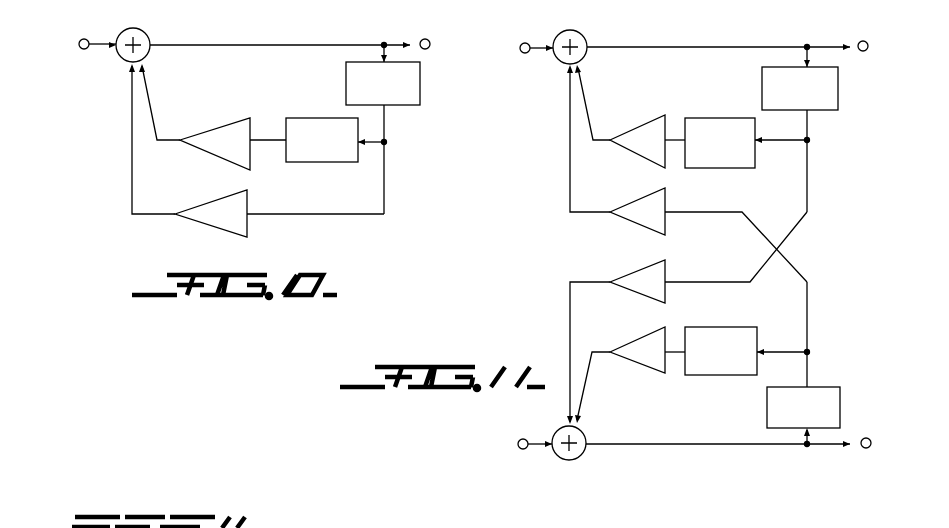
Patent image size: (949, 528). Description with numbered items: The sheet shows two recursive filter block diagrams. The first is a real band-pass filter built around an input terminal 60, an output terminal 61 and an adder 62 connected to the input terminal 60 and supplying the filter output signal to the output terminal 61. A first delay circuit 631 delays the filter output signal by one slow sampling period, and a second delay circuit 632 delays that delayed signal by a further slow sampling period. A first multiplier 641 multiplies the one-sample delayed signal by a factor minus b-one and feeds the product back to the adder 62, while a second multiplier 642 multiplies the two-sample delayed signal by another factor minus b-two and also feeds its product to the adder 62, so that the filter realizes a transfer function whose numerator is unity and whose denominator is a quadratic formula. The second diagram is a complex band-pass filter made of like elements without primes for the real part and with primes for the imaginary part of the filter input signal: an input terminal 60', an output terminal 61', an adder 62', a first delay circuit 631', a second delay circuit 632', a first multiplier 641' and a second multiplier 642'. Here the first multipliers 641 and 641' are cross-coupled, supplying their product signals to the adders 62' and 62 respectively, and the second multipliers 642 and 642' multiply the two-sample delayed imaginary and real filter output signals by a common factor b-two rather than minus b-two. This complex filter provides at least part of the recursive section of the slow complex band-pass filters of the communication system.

In FIG. 10, the input terminal 60 is at (75, 48).
In FIG. 11, the input terminal 60 is at (525, 65).
In FIG. 10, the output terminal 61 is at (438, 57).
In FIG. 11, the output terminal 61 is at (870, 67).
In FIG. 10, the adder 62 is at (100, 65).
In FIG. 11, the adder 62 is at (591, 39).
In FIG. 10, the first delay circuit 631 is at (403, 97).
In FIG. 11, the first delay circuit 631 is at (824, 101).
In FIG. 10, the second delay circuit 632 is at (322, 157).
In FIG. 11, the second delay circuit 632 is at (720, 120).
In FIG. 10, the first multiplier 641 is at (256, 160).
In FIG. 11, the first multiplier 641 is at (687, 318).
In FIG. 10, the second multiplier 642 is at (212, 120).
In FIG. 11, the second multiplier 642 is at (641, 117).
In FIG. 11, the input terminal 60' is at (502, 445).
In FIG. 11, the output terminal 61' is at (869, 462).
In FIG. 11, the adder 62' is at (593, 460).
In FIG. 11, the first delay circuit 631' is at (830, 399).
In FIG. 11, the second delay circuit 632' is at (746, 374).
In FIG. 11, the first multiplier 641' is at (687, 173).
In FIG. 11, the second multiplier 642' is at (634, 365).